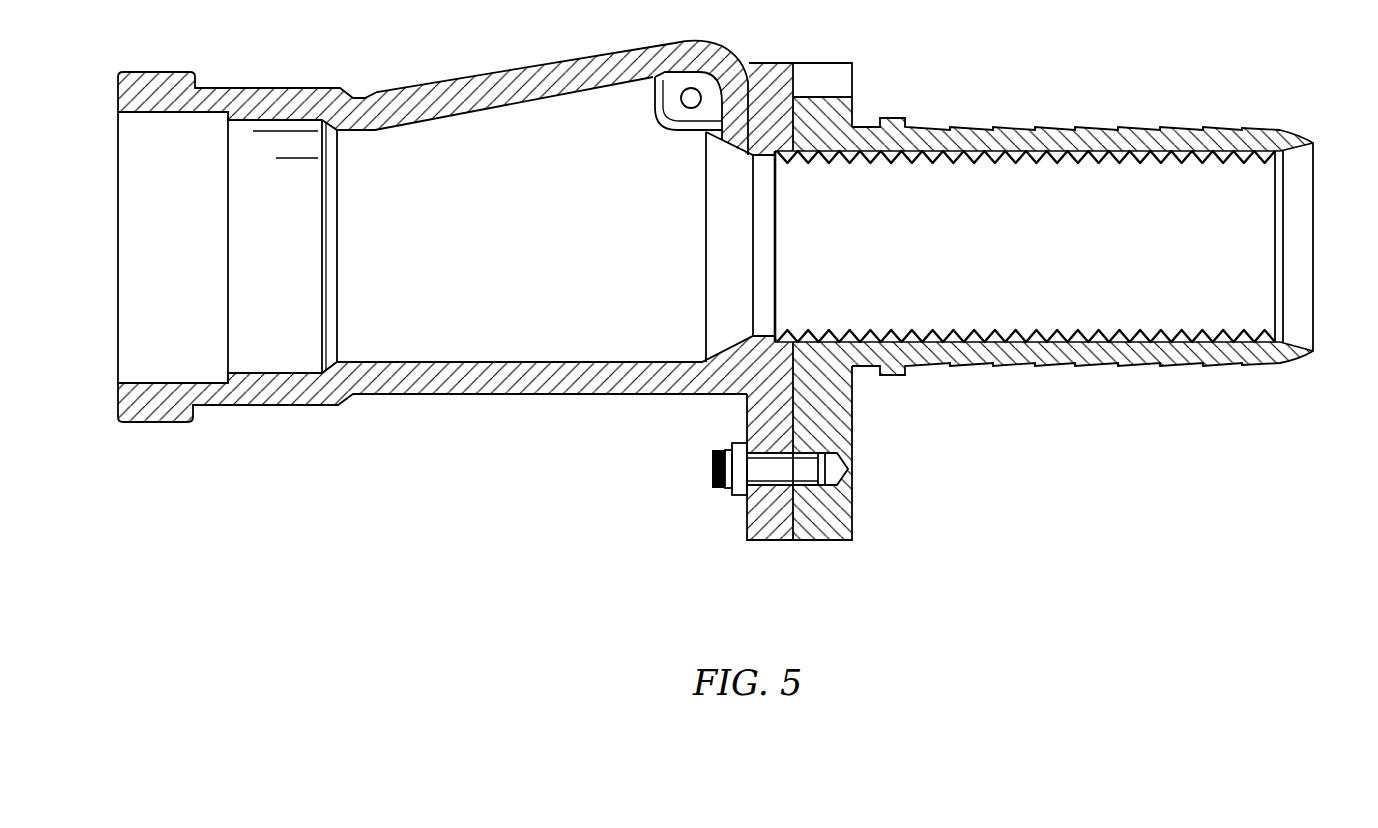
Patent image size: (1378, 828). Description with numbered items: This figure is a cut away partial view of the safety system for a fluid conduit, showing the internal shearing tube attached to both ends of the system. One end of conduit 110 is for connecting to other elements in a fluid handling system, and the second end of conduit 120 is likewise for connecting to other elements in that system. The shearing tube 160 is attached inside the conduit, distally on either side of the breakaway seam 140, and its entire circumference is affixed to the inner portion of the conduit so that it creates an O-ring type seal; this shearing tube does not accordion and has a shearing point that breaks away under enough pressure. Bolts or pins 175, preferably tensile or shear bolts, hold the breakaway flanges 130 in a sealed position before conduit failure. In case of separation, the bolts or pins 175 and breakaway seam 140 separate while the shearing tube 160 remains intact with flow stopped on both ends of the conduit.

The one end of conduit 110 is at (1227, 363).
The second end of conduit 120 is at (303, 395).
The breakaway flanges 130 is at (833, 418).
The breakaway seam 140 is at (792, 540).
The shearing tube 160 is at (1098, 332).
The bolts or pins 175 is at (713, 478).